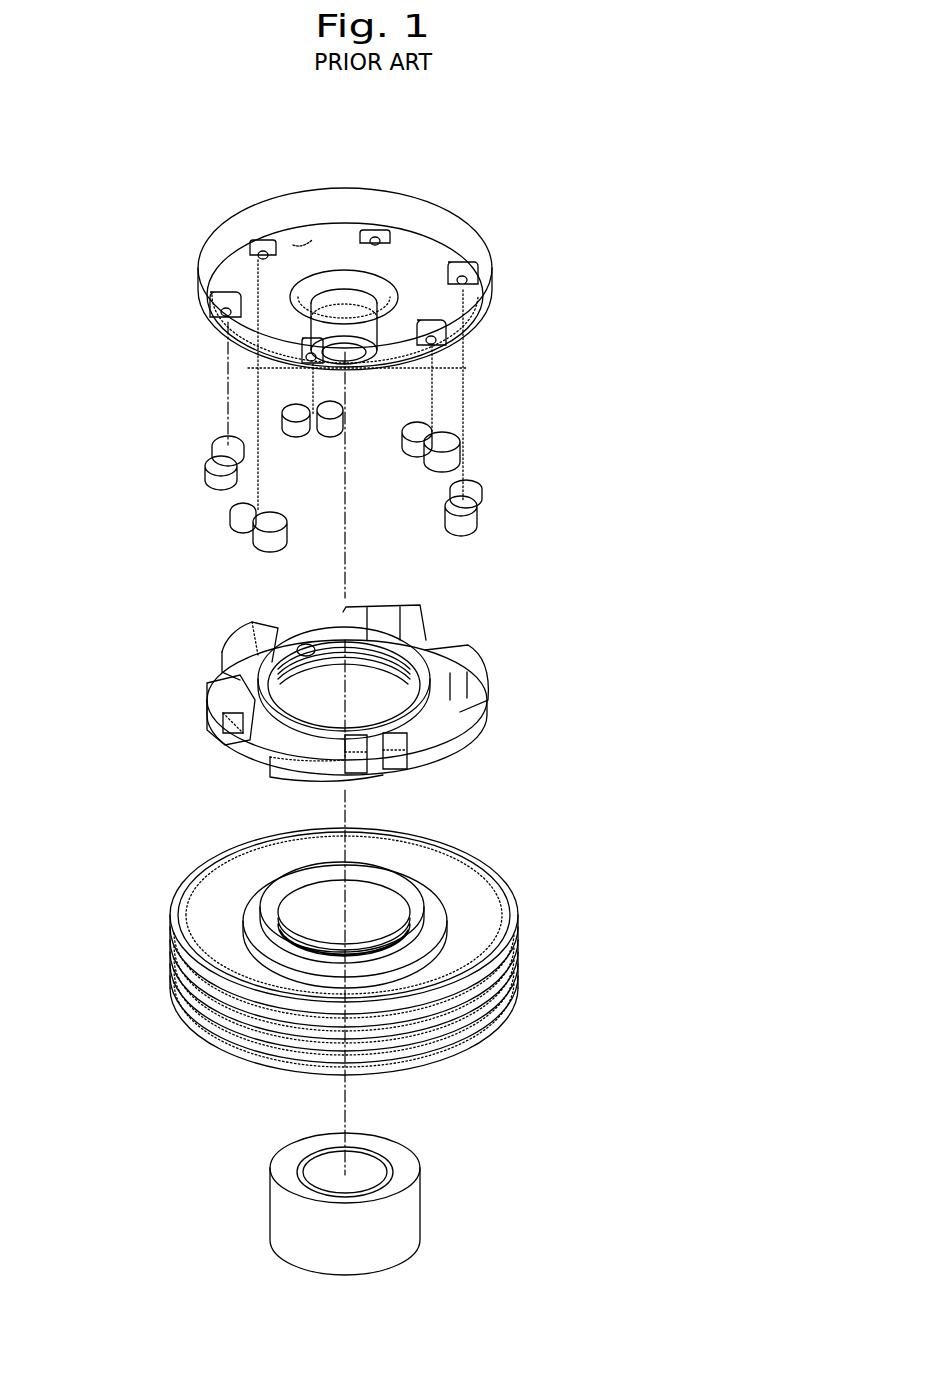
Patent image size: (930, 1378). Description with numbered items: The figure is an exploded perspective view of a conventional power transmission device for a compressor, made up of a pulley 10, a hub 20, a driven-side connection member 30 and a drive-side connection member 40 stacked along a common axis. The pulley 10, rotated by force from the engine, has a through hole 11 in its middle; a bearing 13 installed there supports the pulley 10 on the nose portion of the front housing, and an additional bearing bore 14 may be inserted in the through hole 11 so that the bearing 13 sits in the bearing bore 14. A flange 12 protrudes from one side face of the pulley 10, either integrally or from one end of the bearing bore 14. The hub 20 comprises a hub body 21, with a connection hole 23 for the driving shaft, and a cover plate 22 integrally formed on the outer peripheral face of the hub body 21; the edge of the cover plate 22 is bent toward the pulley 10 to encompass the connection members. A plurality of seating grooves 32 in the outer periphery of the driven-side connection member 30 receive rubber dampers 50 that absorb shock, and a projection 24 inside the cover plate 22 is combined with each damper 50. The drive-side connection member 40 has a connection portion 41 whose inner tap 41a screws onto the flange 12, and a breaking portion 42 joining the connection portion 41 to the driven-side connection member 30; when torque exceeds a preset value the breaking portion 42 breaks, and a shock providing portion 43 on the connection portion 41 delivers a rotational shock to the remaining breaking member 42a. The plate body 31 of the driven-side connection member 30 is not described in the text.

The pulley 10 is at (513, 1017).
The through hole 11 is at (320, 918).
The flange 12 is at (260, 897).
The bearing 13 is at (320, 1236).
The bearing bore 14 is at (310, 985).
The hub 20 is at (487, 227).
The hub body 21 is at (322, 318).
The cover plate 22 is at (293, 245).
The connection hole 23 is at (465, 373).
The projection 24 is at (488, 292).
The driven-side connection member 30 is at (450, 750).
The plate body 31 is at (307, 767).
The seating grooves 32 is at (430, 623).
The drive-side connection member 40 is at (355, 728).
The connection portion 41 is at (281, 633).
The tap 41a is at (228, 692).
The breaking portion 42 is at (283, 644).
The remaining breaking member 42a is at (467, 663).
The shock providing portion 43 is at (240, 648).
The damper 50 is at (478, 515).